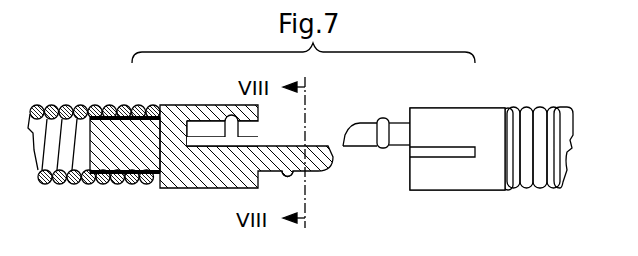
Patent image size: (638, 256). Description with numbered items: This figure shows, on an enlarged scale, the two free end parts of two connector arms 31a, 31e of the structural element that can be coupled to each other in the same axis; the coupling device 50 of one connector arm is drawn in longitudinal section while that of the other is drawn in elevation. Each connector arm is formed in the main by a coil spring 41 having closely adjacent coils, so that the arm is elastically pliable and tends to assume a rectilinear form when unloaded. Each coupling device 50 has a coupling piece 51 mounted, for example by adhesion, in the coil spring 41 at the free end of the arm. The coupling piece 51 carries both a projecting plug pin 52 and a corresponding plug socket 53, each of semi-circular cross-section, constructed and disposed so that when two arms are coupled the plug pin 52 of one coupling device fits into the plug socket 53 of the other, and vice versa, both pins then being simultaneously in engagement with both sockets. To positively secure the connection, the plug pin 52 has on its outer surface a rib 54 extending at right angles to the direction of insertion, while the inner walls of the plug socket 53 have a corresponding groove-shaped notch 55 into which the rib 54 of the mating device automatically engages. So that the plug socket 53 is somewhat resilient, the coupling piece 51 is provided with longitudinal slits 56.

The connector arm 31a is at (63, 109).
The coil spring 41 is at (68, 180).
The coupling piece 51 is at (180, 180).
The plug socket 53 is at (256, 129).
The groove-shaped notch 55 is at (226, 118).
The longitudinal slit 56 is at (214, 143).
The rib 54 is at (293, 176).
The plug pin 52 is at (360, 138).
The coupling device 50 is at (314, 127).
The connector arm 31e is at (546, 107).